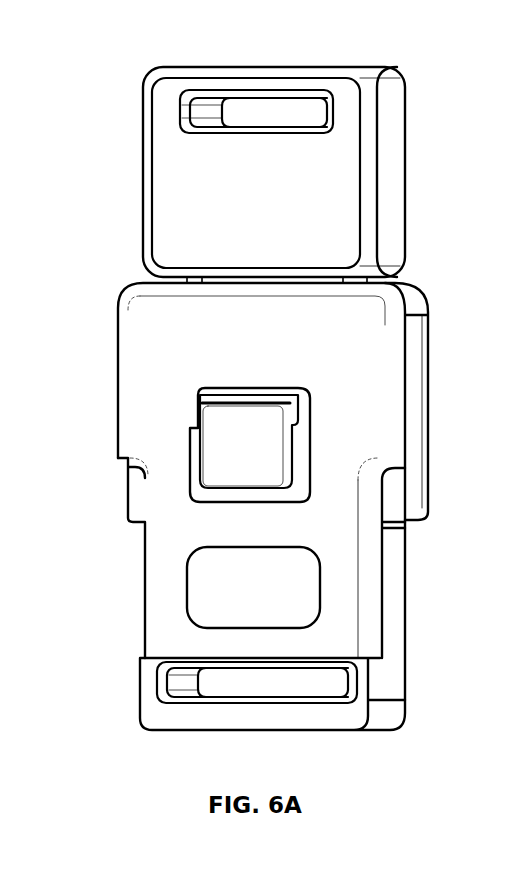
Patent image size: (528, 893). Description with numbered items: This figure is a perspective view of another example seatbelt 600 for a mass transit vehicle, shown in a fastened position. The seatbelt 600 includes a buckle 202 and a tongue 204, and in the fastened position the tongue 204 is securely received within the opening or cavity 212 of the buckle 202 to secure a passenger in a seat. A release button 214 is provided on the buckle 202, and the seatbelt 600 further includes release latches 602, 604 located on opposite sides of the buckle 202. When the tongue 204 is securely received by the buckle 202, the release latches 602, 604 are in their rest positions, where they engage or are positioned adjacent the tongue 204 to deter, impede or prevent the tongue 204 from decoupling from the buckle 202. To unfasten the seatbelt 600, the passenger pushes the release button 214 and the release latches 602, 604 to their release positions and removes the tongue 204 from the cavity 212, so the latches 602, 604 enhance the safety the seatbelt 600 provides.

The seatbelt 600 is at (276, 372).
The buckle 202 is at (272, 506).
The tongue 204 is at (202, 280).
The cavity 212 is at (415, 265).
The release button 214 is at (222, 459).
The release latch 602 is at (127, 500).
The release latch 604 is at (412, 491).